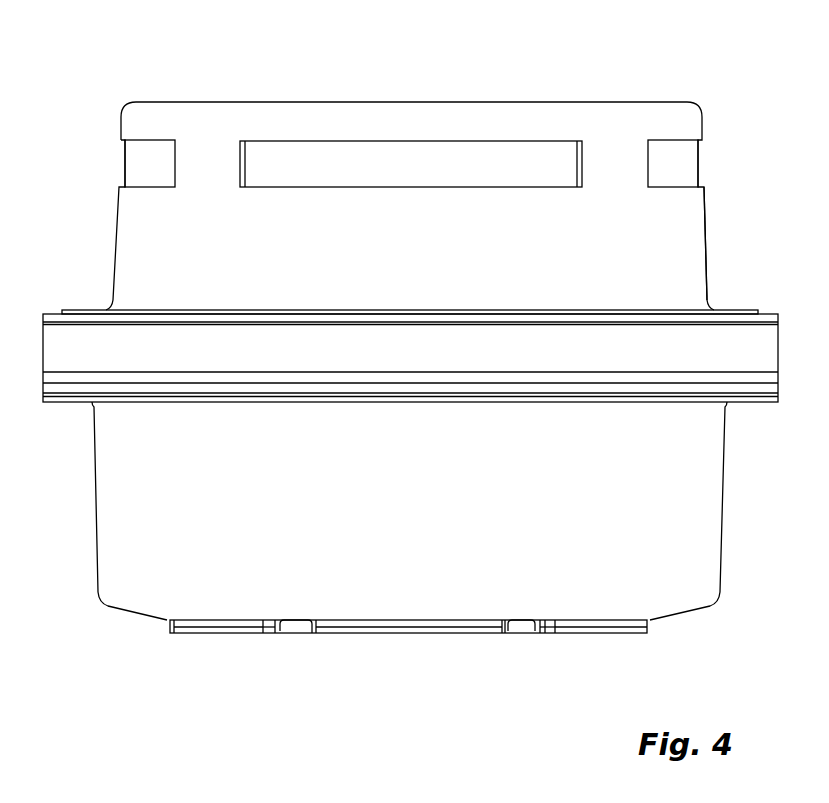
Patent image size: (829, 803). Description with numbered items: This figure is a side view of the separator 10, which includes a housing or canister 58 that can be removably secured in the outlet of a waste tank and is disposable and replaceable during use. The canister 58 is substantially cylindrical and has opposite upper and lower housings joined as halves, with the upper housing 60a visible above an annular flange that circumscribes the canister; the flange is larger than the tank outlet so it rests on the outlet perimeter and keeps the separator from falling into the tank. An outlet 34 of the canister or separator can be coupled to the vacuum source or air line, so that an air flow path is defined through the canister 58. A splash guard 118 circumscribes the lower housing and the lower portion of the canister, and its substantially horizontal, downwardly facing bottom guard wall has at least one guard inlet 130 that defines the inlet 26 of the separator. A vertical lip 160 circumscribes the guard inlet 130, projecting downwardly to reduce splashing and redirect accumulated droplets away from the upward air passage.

The separator 10 is at (375, 99).
The canister 58 is at (493, 99).
The outlet 34 is at (118, 167).
The upper housing 60a is at (705, 218).
The splash guard 118 is at (97, 584).
The inlet 26 is at (188, 635).
The guard inlet 130 is at (228, 635).
The vertical lip 160 is at (275, 635).